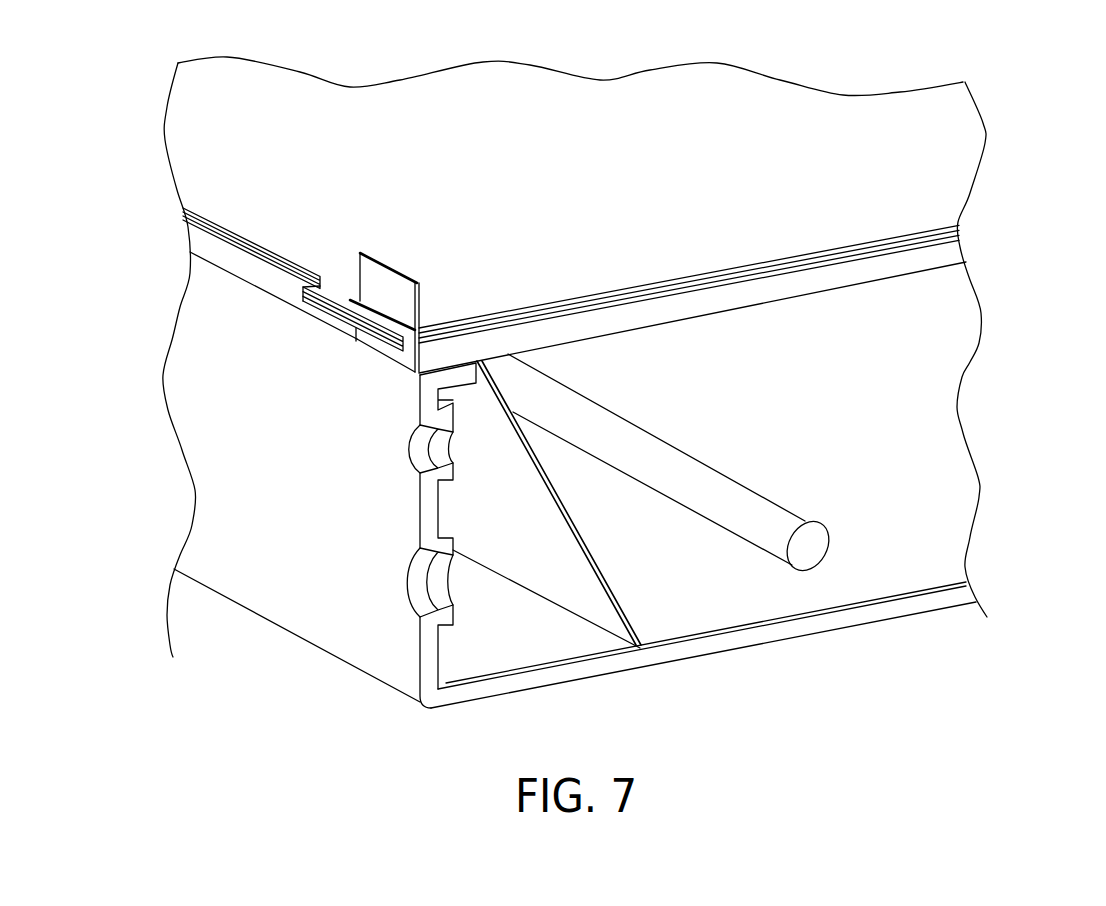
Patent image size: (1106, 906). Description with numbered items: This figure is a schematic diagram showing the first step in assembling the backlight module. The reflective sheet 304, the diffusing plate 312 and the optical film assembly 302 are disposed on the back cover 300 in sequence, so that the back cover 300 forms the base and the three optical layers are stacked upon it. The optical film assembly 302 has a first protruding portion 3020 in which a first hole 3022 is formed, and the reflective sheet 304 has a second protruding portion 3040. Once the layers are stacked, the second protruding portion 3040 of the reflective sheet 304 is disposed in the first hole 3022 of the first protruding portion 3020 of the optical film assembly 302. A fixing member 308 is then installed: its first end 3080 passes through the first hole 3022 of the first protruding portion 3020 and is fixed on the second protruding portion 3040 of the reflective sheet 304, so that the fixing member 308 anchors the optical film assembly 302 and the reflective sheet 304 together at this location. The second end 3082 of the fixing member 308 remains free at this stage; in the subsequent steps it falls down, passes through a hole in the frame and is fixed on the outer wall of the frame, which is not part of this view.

The back cover 300 is at (882, 610).
The optical film assembly 302 is at (940, 171).
The reflective sheet 304 is at (623, 607).
The fixing member 308 is at (381, 366).
The diffusing plate 312 is at (943, 253).
The first protruding portion 3020 is at (352, 300).
The first hole 3022 is at (433, 313).
The second protruding portion 3040 is at (375, 345).
The first end 3080 is at (414, 378).
The second end 3082 is at (377, 270).